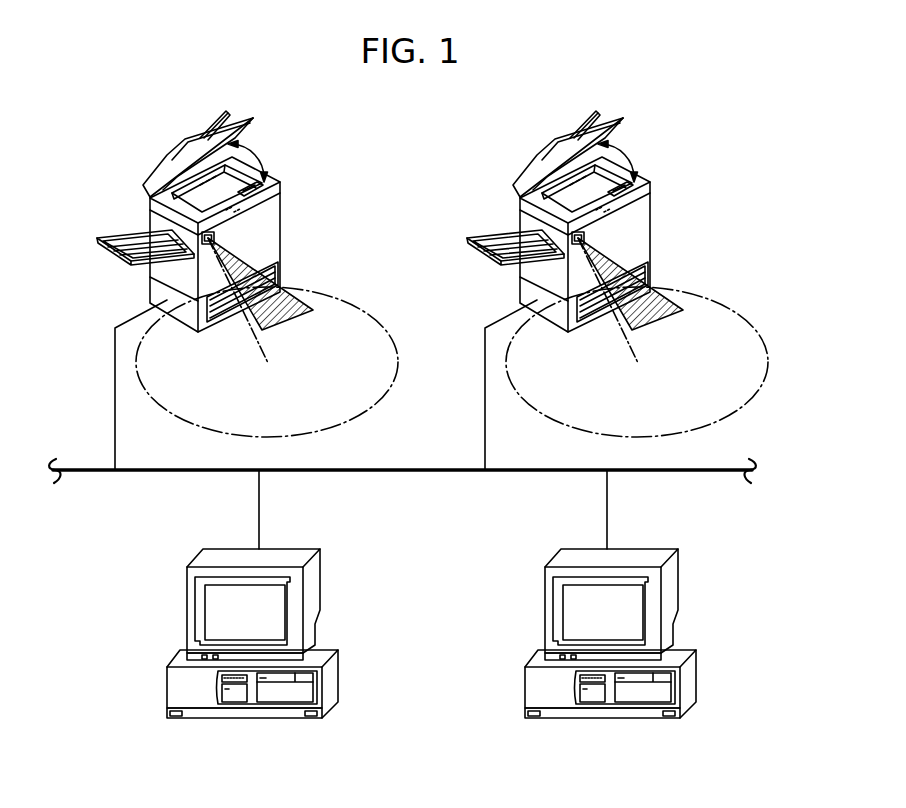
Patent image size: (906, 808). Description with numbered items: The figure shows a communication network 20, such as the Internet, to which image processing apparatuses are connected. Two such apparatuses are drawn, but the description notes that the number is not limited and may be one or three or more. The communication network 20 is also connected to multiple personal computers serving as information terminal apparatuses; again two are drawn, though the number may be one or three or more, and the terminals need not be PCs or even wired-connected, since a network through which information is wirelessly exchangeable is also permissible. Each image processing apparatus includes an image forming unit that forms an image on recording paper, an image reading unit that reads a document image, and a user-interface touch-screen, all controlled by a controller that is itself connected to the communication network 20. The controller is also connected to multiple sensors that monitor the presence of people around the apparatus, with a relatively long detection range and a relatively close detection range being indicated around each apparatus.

The communication network 20 is at (368, 469).